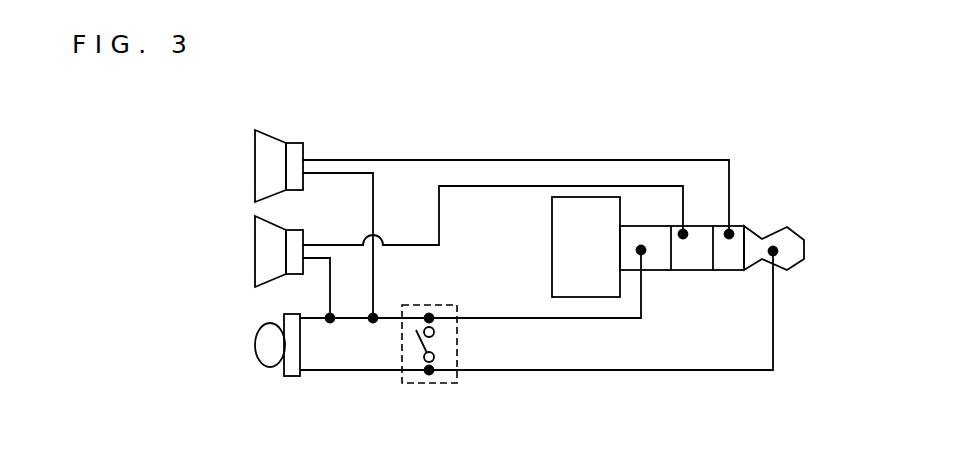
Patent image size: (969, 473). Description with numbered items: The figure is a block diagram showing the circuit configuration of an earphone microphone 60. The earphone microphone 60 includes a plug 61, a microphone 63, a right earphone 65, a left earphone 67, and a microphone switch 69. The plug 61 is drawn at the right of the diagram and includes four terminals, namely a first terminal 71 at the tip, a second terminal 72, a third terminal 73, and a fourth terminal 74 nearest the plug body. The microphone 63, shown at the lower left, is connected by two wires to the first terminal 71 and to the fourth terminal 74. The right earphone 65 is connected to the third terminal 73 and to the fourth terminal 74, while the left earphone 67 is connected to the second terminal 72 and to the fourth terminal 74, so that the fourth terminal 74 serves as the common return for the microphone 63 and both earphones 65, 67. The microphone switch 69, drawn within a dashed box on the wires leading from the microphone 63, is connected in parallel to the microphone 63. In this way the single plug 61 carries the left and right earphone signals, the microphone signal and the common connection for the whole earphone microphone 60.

The earphone microphone 60 is at (393, 102).
The plug 61 is at (801, 222).
The microphone 63 is at (260, 348).
The right earphone 65 is at (263, 231).
The left earphone 67 is at (263, 145).
The microphone switch 69 is at (429, 384).
The first terminal 71 is at (795, 257).
The second terminal 72 is at (733, 272).
The third terminal 73 is at (694, 272).
The fourth terminal 74 is at (653, 272).